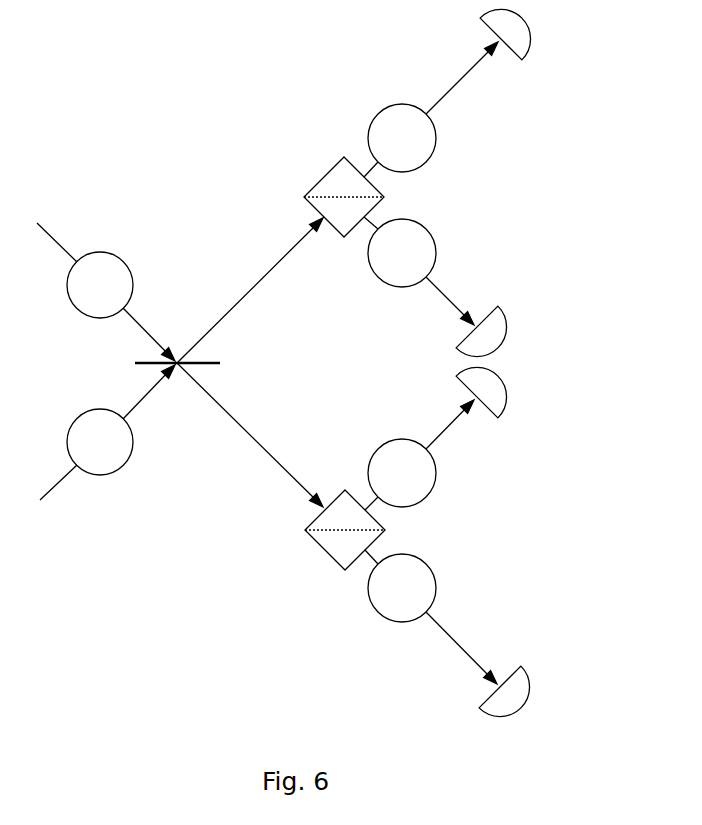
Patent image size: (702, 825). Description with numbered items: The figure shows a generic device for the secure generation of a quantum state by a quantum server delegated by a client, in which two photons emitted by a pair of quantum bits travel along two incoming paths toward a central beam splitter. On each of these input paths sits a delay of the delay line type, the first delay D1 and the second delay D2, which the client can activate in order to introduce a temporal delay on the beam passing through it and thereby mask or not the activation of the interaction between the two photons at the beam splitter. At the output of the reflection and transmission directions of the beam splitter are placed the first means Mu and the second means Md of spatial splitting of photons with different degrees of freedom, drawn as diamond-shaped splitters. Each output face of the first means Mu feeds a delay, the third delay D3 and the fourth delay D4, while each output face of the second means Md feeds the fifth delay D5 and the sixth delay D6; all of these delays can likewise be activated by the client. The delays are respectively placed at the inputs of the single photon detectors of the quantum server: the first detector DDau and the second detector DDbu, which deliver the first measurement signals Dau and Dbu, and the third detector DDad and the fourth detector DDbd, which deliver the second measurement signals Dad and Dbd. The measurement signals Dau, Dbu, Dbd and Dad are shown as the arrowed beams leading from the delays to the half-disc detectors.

The first delay D1 is at (100, 285).
The second delay D2 is at (100, 442).
The third delay D3 is at (402, 138).
The fourth delay D4 is at (402, 253).
The fifth delay D5 is at (402, 473).
The sixth delay D6 is at (402, 588).
The first means of spatial splitting of photons Mu is at (338, 195).
The second means of spatial splitting of photons Md is at (338, 535).
The first measurement signal Dau is at (456, 78).
The first measurement signal Dbu is at (455, 299).
The second measurement signal Dbd is at (454, 430).
The second measurement signal Dad is at (455, 648).
The first detector of single photons DDau is at (531, 34).
The second detector of single photons DDbu is at (508, 331).
The fourth detector of single photons DDbd is at (508, 392).
The third detector of single photons DDad is at (530, 691).